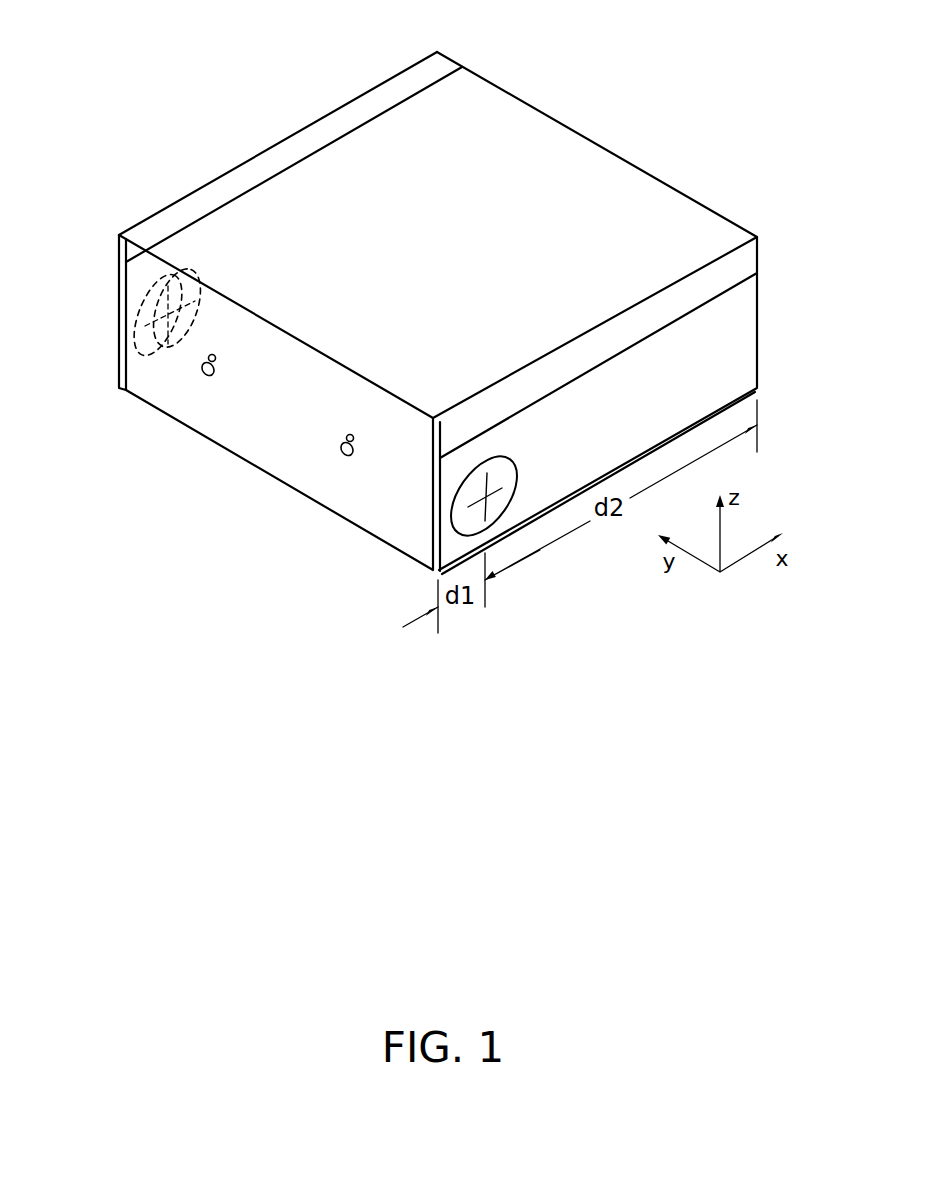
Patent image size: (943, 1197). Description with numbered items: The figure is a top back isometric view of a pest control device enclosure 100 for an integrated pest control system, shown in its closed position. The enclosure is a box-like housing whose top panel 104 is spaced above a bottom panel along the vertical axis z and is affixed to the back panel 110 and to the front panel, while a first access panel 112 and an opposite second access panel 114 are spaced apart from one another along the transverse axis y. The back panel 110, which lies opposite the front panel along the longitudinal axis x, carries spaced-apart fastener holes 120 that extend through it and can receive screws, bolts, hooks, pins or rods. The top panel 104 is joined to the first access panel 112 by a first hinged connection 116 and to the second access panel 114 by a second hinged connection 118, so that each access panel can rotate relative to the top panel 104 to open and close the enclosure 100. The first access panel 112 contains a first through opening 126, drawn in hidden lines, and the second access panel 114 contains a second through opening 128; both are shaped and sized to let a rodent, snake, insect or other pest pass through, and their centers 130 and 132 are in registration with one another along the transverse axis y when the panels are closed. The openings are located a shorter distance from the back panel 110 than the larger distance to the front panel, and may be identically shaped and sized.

The pest control device enclosure 100 is at (236, 100).
The top panel 104 is at (523, 178).
The back panel 110 is at (265, 427).
The first access panel 112 is at (119, 292).
The second access panel 114 is at (717, 328).
The first hinged connection 116 is at (187, 196).
The second hinged connection 118 is at (710, 262).
The fastener holes 120 is at (200, 378).
The first through opening 126 is at (148, 297).
The second through opening 128 is at (517, 477).
The center of first through opening 130 is at (168, 315).
The center of second through opening 132 is at (502, 477).